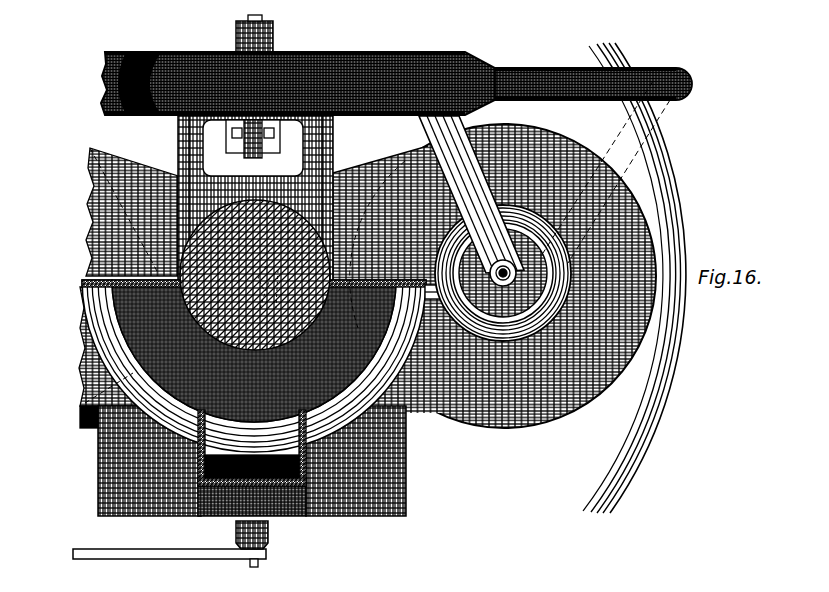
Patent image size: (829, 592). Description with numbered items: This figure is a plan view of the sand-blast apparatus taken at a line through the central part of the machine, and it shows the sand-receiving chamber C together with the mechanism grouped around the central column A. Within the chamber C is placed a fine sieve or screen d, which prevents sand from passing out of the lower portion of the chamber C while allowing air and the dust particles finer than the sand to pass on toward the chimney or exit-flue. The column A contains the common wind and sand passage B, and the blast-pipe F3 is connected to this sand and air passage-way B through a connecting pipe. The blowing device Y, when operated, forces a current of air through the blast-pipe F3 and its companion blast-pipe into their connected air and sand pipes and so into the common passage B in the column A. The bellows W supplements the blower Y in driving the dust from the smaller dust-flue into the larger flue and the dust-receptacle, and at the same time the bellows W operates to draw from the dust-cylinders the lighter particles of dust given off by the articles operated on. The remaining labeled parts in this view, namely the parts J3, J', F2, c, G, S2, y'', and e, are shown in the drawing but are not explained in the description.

The horizontal bar J3 is at (298, 70).
The bar extension J' is at (581, 64).
The bellows W is at (74, 474).
The blowing device Y is at (261, 155).
The blast-pipe F3 is at (683, 76).
The inclined arm F2 is at (450, 115).
The pin c is at (438, 300).
The pulley G is at (545, 262).
The column A is at (255, 275).
The wind and sand passage B is at (259, 286).
The sand-receiving chamber C is at (96, 326).
The sieve or screen d is at (115, 366).
The nut S2 is at (236, 514).
The stem y'' is at (272, 547).
The rod e is at (169, 562).